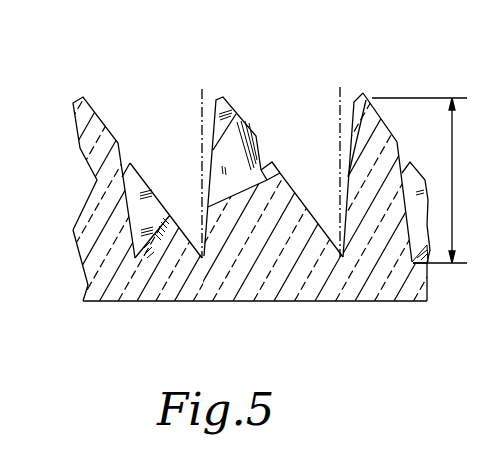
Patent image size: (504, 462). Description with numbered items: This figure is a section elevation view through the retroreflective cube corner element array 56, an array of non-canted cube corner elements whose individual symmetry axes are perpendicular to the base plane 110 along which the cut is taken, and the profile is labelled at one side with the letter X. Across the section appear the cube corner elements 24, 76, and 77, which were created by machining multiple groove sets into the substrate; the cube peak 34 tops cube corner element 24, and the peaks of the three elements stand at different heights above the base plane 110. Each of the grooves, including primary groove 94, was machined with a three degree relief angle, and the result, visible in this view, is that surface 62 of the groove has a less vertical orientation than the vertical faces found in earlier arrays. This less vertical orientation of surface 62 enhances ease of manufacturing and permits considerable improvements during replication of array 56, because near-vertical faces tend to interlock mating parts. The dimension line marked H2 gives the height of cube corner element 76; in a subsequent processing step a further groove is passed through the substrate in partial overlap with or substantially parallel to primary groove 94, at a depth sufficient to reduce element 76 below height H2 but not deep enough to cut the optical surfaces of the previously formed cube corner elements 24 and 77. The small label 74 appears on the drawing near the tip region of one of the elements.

The cube corner element 24 is at (179, 216).
The base plane 110 is at (148, 303).
The reference line X is at (83, 268).
The retroreflective cube corner element array 56 is at (73, 230).
The cube peak 34 is at (179, 216).
The surface 62 is at (213, 136).
The tooth tip 74 is at (362, 95).
The cube corner element 76 is at (388, 185).
The cube corner element 77 is at (243, 203).
The primary groove 94 is at (344, 258).
The height of cube corner element 76 H2 is at (419, 180).